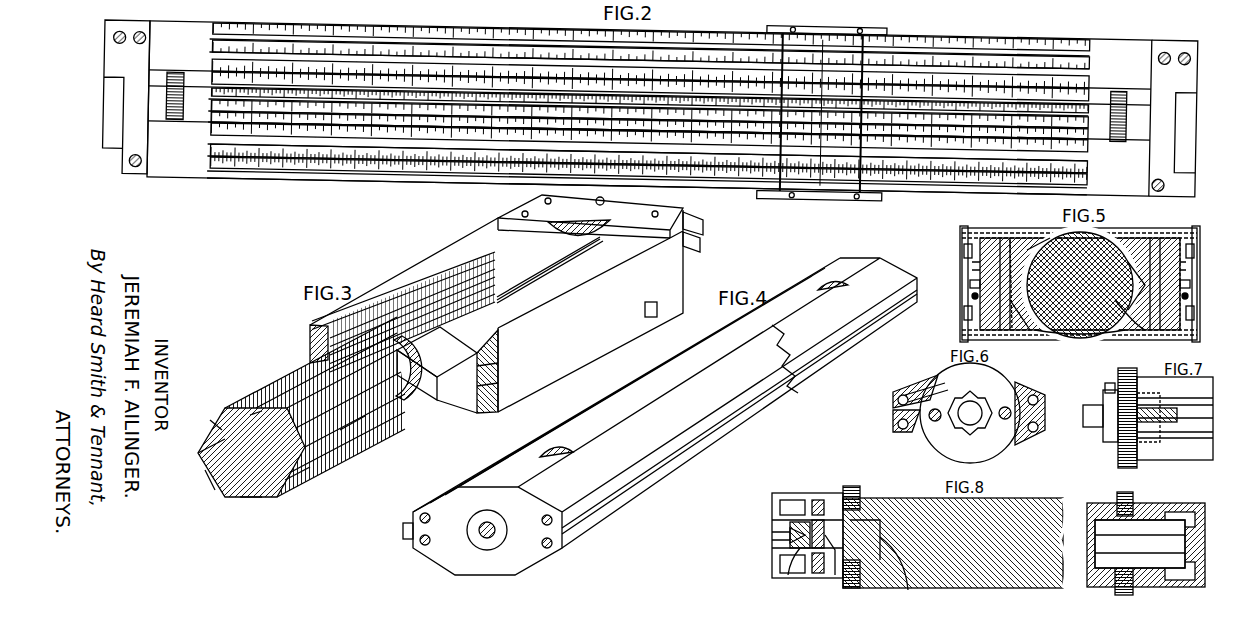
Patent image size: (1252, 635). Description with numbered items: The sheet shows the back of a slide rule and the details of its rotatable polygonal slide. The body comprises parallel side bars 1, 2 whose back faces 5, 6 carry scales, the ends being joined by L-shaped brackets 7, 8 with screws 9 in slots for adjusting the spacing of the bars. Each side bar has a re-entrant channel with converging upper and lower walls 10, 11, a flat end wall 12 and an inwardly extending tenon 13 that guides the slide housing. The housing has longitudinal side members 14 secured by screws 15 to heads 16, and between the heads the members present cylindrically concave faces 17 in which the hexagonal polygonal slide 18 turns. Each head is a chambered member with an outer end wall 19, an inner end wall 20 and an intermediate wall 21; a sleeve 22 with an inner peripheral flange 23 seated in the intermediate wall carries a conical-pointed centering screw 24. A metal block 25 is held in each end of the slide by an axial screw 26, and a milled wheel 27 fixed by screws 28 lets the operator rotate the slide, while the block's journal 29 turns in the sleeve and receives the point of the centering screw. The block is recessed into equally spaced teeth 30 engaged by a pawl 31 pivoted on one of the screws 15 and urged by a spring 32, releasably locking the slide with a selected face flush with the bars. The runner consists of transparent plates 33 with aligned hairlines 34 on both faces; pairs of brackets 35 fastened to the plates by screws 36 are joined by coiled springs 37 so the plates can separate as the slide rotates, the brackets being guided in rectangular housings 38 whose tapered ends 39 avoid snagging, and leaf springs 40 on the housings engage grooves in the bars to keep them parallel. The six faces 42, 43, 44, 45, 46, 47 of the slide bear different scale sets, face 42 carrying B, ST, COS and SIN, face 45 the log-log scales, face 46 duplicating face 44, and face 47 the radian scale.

In FIG. 2, the side bar 1 is at (311, 179).
In FIG. 3, the side bar 1 is at (600, 350).
In FIG. 2, the side bar 2 is at (310, 23).
In FIG. 3, the side bar 2 is at (471, 241).
In FIG. 2, the lower face of side bar 5 is at (372, 178).
In FIG. 3, the lower face of side bar 5 is at (560, 292).
In FIG. 2, the upper face of side bar 6 is at (365, 36).
In FIG. 3, the upper face of side bar 6 is at (400, 276).
In FIG. 3, the L-shaped bracket 7 is at (655, 318).
In FIG. 5, the L-shaped bracket 7 is at (1040, 236).
In FIG. 2, the L-shaped bracket 8 is at (125, 61).
In FIG. 3, the L-shaped bracket 8 is at (619, 214).
In FIG. 5, the L-shaped bracket 8 is at (1048, 336).
In FIG. 2, the screw 9 is at (134, 162).
In FIG. 3, the screw 9 is at (670, 206).
In FIG. 5, the screw 9 is at (1178, 240).
In FIG. 3, the upper wall of channel 10 is at (490, 340).
In FIG. 5, the upper wall of channel 10 is at (1010, 240).
In FIG. 3, the lower wall of channel 11 is at (480, 415).
In FIG. 5, the lower wall of channel 11 is at (998, 335).
In FIG. 3, the flat end wall 12 is at (498, 388).
In FIG. 5, the flat end wall 12 is at (1016, 240).
In FIG. 3, the tenon 13 is at (498, 368).
In FIG. 5, the tenon 13 is at (1020, 335).
In FIG. 3, the side member of housing 14 is at (430, 410).
In FIG. 4, the side member of housing 14 is at (848, 352).
In FIG. 6, the side member of housing 14 is at (1030, 392).
In FIG. 4, the screw 15 is at (552, 545).
In FIG. 6, the screw 15 is at (903, 398).
In FIG. 3, the head 16 is at (700, 222).
In FIG. 4, the head 16 is at (888, 270).
In FIG. 8, the head 16 is at (1170, 510).
In FIG. 3, the cylindrically concave face 17 is at (410, 402).
In FIG. 5, the cylindrically concave face 17 is at (1134, 312).
In FIG. 3, the polygonal slide 18 is at (266, 498).
In FIG. 4, the polygonal slide 18 is at (652, 396).
In FIG. 5, the polygonal slide 18 is at (1078, 335).
In FIG. 8, the outer end wall 19 is at (775, 510).
In FIG. 8, the inner end wall 20 is at (845, 498).
In FIG. 3, the intermediate wall 21 is at (692, 260).
In FIG. 8, the intermediate wall 21 is at (818, 520).
In FIG. 8, the sleeve 22 is at (797, 520).
In FIG. 8, the inner peripheral flange 23 is at (830, 560).
In FIG. 4, the centering screw 24 is at (468, 540).
In FIG. 8, the centering screw 24 is at (775, 537).
In FIG. 8, the metal block 25 is at (878, 562).
In FIG. 8, the axial screw 26 is at (908, 580).
In FIG. 3, the milled wheel 27 is at (588, 242).
In FIG. 4, the milled wheel 27 is at (818, 285).
In FIG. 5, the milled wheel 27 is at (1120, 332).
In FIG. 6, the milled wheel 27 is at (940, 452).
In FIG. 7, the milled wheel 27 is at (1120, 466).
In FIG. 8, the milled wheel 27 is at (855, 492).
In FIG. 6, the screw 28 is at (998, 378).
In FIG. 7, the journal 29 is at (1097, 410).
In FIG. 8, the journal 29 is at (788, 576).
In FIG. 6, the tooth 30 is at (968, 432).
In FIG. 7, the tooth 30 is at (1105, 430).
In FIG. 6, the pawl 31 is at (945, 383).
In FIG. 7, the pawl 31 is at (1110, 384).
In FIG. 6, the spring 32 is at (896, 420).
In FIG. 5, the transparent plate 33 is at (964, 236).
In FIG. 2, the hairline 34 is at (777, 25).
In FIG. 5, the bracket 35 is at (964, 251).
In FIG. 5, the screw 36 is at (963, 228).
In FIG. 5, the coiled spring 37 is at (970, 284).
In FIG. 2, the rectangular housing 38 is at (826, 36).
In FIG. 5, the rectangular housing 38 is at (972, 266).
In FIG. 2, the housing end 39 is at (782, 31).
In FIG. 5, the leaf spring 40 is at (972, 296).
In FIG. 3, the flat face 42 is at (258, 407).
In FIG. 3, the face 43 is at (360, 420).
In FIG. 3, the face 44 is at (300, 490).
In FIG. 3, the face 45 is at (250, 500).
In FIG. 3, the face 46 is at (210, 490).
In FIG. 3, the face 47 is at (215, 420).